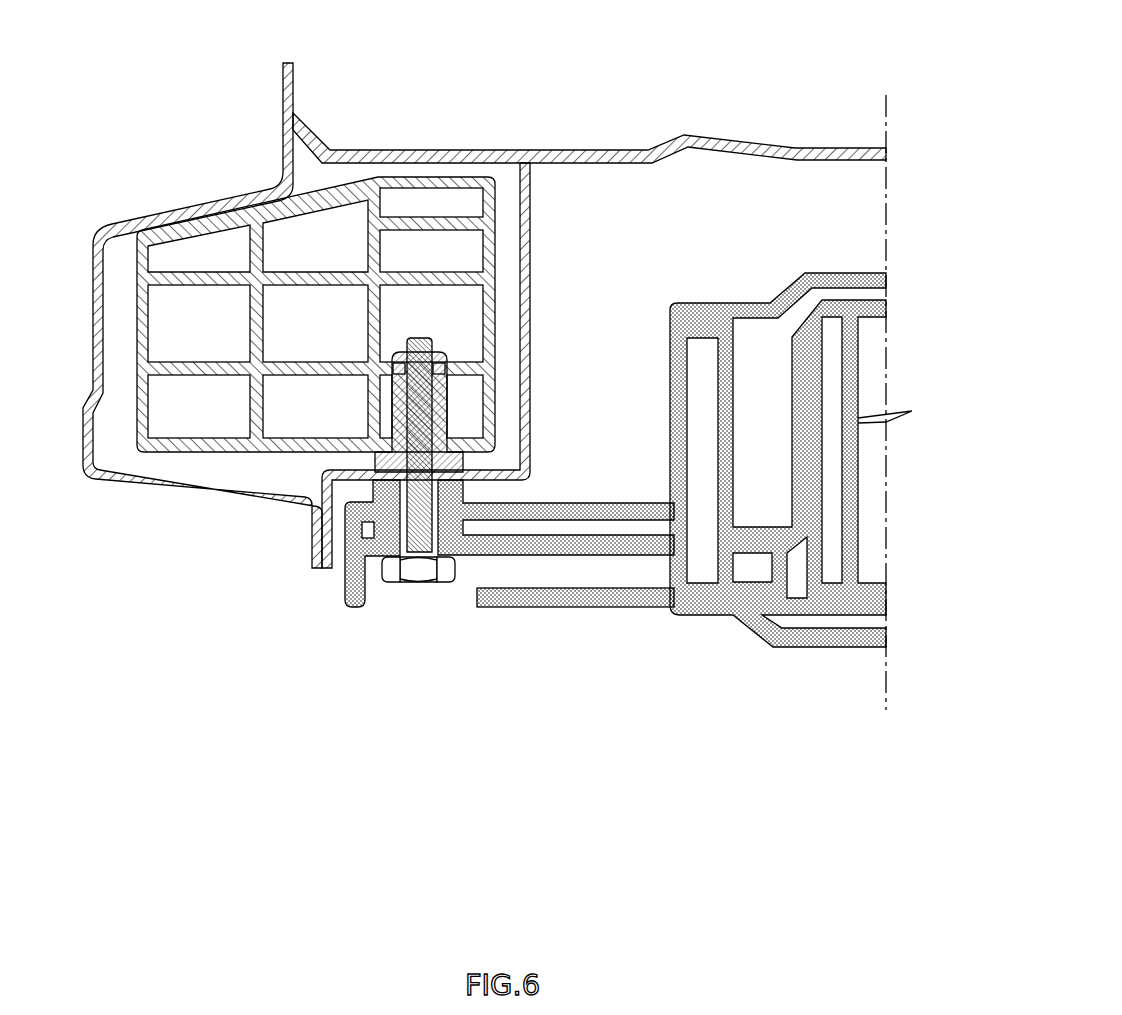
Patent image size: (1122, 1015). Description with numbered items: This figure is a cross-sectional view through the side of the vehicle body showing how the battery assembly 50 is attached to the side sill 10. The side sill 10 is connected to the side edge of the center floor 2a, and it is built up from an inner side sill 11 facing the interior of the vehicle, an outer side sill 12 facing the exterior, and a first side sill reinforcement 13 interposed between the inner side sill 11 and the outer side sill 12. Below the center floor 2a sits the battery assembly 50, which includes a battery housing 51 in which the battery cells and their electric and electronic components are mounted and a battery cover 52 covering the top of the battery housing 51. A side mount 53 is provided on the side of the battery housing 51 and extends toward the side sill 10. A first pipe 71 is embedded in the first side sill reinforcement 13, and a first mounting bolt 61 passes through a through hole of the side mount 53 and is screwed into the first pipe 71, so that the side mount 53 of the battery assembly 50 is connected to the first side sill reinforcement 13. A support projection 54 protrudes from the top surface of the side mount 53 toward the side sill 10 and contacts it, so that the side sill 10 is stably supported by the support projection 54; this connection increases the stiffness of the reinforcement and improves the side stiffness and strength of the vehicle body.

The side sill 10 is at (314, 315).
The outer side sill 12 is at (95, 345).
The inner side sill 11 is at (530, 301).
The first side sill reinforcement 13 is at (430, 180).
The center floor 2a is at (803, 150).
The first pipe 71 is at (440, 392).
The first mounting bolt 61 is at (428, 420).
The support projection 54 is at (458, 490).
The side mount 53 is at (562, 598).
The battery assembly 50 is at (775, 446).
The battery cover 52 is at (820, 273).
The battery housing 51 is at (726, 615).